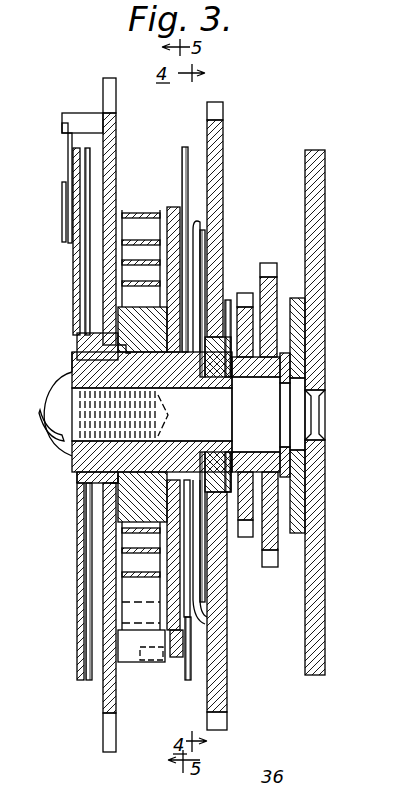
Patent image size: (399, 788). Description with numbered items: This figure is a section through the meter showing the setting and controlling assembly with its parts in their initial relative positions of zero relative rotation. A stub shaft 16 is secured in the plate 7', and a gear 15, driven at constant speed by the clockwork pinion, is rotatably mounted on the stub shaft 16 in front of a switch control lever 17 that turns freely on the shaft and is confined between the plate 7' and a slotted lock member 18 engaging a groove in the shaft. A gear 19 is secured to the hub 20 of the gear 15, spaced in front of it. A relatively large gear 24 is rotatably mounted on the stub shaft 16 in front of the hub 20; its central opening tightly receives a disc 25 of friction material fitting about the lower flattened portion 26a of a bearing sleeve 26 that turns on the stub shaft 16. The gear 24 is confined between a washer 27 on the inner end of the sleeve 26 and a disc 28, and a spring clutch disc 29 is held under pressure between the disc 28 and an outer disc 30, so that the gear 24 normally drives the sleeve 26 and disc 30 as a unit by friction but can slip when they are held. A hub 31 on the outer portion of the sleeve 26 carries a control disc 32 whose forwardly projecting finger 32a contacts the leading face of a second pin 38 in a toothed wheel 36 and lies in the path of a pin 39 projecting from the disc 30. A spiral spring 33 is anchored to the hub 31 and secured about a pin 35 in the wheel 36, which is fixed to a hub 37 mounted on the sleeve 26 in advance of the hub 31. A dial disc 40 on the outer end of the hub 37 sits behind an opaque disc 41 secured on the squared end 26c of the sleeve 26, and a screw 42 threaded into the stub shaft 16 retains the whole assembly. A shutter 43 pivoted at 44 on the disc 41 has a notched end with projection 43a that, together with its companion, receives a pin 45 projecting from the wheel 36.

The plate 7' is at (333, 412).
The gear 15 is at (272, 290).
The stub shaft 16 is at (298, 410).
The switch control lever 17 is at (302, 320).
The slotted lock member 18 is at (288, 370).
The gear 19 is at (245, 537).
The hub 20 is at (283, 466).
The gear 24 is at (223, 141).
The disc 25 is at (215, 452).
The bearing sleeve 26 is at (78, 463).
The lower flattened portion 26a is at (203, 365).
The outer squared end 26c is at (72, 375).
The washer 27 is at (228, 300).
The disc 28 is at (202, 210).
The spring clutch disc 29 is at (212, 243).
The outer disc 30 is at (185, 147).
The hub 31 is at (130, 507).
The control disc 32 is at (171, 207).
The finger 32a is at (172, 660).
The spiral spring 33 is at (140, 212).
The pin 35 is at (120, 623).
The toothed wheel 36 is at (104, 707).
The hub 37 is at (80, 487).
The second pin 38 is at (120, 647).
The pin 39 is at (188, 665).
The dial disc 40 is at (92, 591).
The opaque disc 41 is at (77, 574).
The screw 42 is at (70, 380).
The shutter 43 is at (73, 153).
The projection 43a is at (62, 128).
The pivot 44 is at (62, 186).
The pin 45 is at (77, 118).